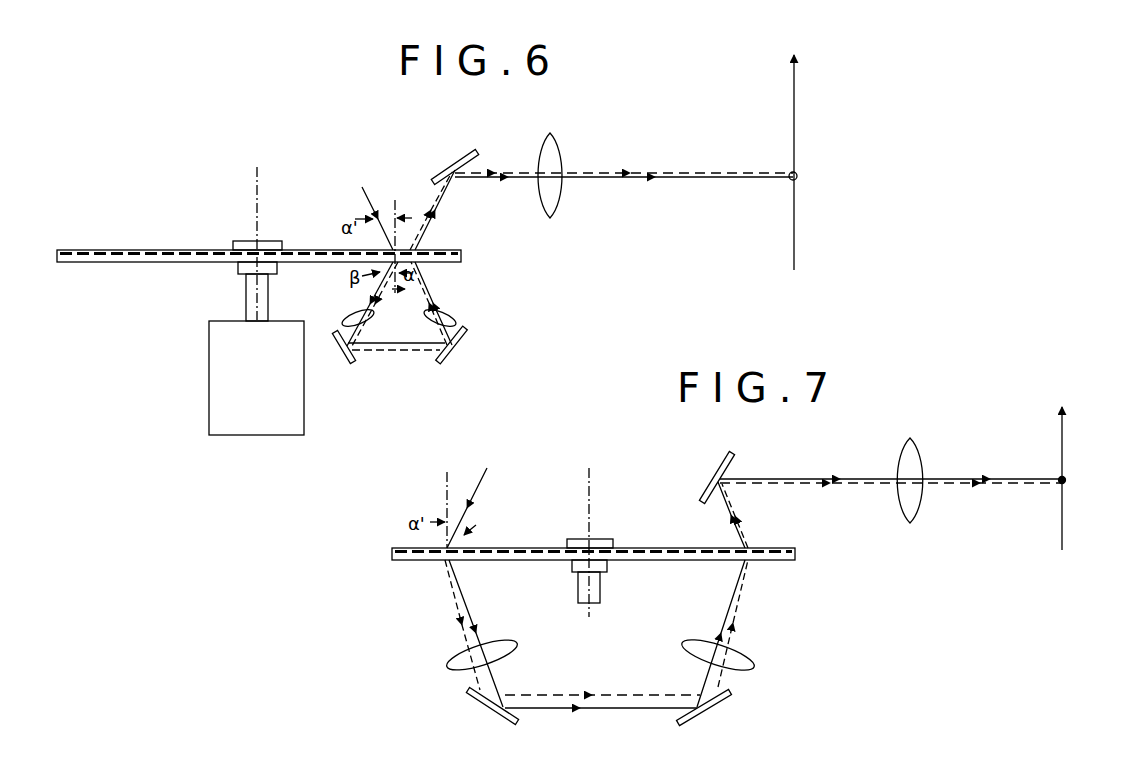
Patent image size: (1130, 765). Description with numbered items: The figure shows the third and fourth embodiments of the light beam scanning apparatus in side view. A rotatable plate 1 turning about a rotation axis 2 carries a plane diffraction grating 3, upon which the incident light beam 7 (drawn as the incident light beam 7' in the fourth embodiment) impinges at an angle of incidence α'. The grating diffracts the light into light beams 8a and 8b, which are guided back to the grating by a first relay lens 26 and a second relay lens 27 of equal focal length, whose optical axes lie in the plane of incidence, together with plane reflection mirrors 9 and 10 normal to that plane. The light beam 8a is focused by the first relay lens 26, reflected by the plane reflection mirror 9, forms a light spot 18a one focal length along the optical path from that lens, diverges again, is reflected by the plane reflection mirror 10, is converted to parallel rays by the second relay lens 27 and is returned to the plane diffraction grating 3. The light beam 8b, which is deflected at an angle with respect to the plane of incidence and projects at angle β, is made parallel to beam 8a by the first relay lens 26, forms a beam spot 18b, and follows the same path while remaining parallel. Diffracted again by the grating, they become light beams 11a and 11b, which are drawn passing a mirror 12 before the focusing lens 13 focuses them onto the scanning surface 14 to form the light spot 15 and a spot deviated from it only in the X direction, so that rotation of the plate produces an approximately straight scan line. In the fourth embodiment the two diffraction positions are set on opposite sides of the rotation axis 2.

In FIG. 6, the rotatable plate 1 is at (57, 257).
In FIG. 7, the rotatable plate 1 is at (797, 556).
In FIG. 6, the rotation axis 2 is at (255, 178).
In FIG. 7, the rotation axis 2 is at (594, 496).
In FIG. 6, the plane diffraction grating 3 is at (330, 249).
In FIG. 7, the plane diffraction grating 3 is at (656, 548).
In FIG. 6, the incident light beam 7 is at (358, 209).
In FIG. 7, the incident light beam 7' is at (485, 508).
In FIG. 6, the light beam 8a is at (370, 302).
In FIG. 7, the light beam 8a is at (477, 612).
In FIG. 6, the light beam 8b is at (378, 313).
In FIG. 7, the light beam 8b is at (458, 603).
In FIG. 6, the plane reflection mirror 9 is at (344, 357).
In FIG. 7, the plane reflection mirror 9 is at (494, 717).
In FIG. 6, the plane reflection mirror 10 is at (445, 360).
In FIG. 7, the plane reflection mirror 10 is at (714, 712).
In FIG. 6, the light beam 11a is at (435, 200).
In FIG. 6, the light beam 11b is at (432, 217).
In FIG. 6, the mirror 12 is at (462, 153).
In FIG. 6, the focusing lens 13 is at (556, 147).
In FIG. 7, the focusing lens 13 is at (918, 456).
In FIG. 6, the scanning surface 14 is at (796, 105).
In FIG. 7, the scanning surface 14 is at (1064, 450).
In FIG. 6, the light spot 15 is at (788, 172).
In FIG. 7, the light spot 15 is at (1056, 478).
In FIG. 6, the light spot 18a is at (403, 337).
In FIG. 6, the beam spot 18b is at (398, 348).
In FIG. 6, the first relay lens 26 is at (342, 316).
In FIG. 7, the first relay lens 26 is at (456, 657).
In FIG. 6, the second relay lens 27 is at (457, 315).
In FIG. 7, the second relay lens 27 is at (752, 660).